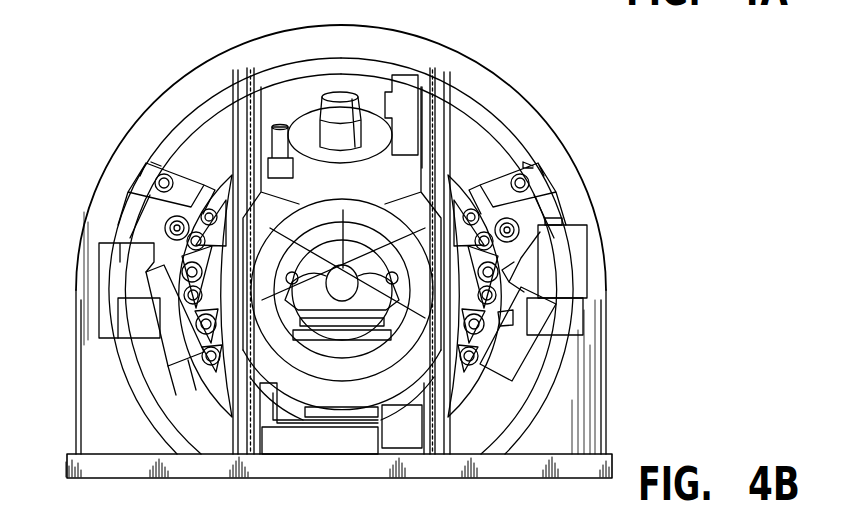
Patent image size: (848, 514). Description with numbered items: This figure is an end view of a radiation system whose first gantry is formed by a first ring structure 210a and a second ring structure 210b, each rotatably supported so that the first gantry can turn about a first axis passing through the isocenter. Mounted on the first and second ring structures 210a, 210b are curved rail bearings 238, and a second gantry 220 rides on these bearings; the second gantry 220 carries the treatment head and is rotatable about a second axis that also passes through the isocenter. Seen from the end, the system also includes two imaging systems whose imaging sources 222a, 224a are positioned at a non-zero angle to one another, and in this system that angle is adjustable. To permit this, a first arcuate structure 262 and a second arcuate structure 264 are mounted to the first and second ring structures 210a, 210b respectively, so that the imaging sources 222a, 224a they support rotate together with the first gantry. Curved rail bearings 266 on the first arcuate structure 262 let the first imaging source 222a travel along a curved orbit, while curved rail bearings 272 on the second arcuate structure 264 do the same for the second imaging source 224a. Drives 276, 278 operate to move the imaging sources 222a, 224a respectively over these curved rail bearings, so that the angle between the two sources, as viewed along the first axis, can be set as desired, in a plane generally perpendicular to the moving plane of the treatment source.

The first ring structure 210a is at (226, 80).
The second ring structure 210b is at (448, 80).
The second gantry 220 is at (290, 76).
The curved rail bearings 238 is at (249, 78).
The imaging source 222a is at (188, 165).
The imaging source 224a is at (500, 167).
The first arcuate structure 262 is at (178, 245).
The second arcuate structure 264 is at (500, 240).
The curved rail bearings 266 is at (99, 243).
The curved rail bearings 272 is at (505, 270).
The drive 276 is at (160, 262).
The drive 278 is at (545, 290).